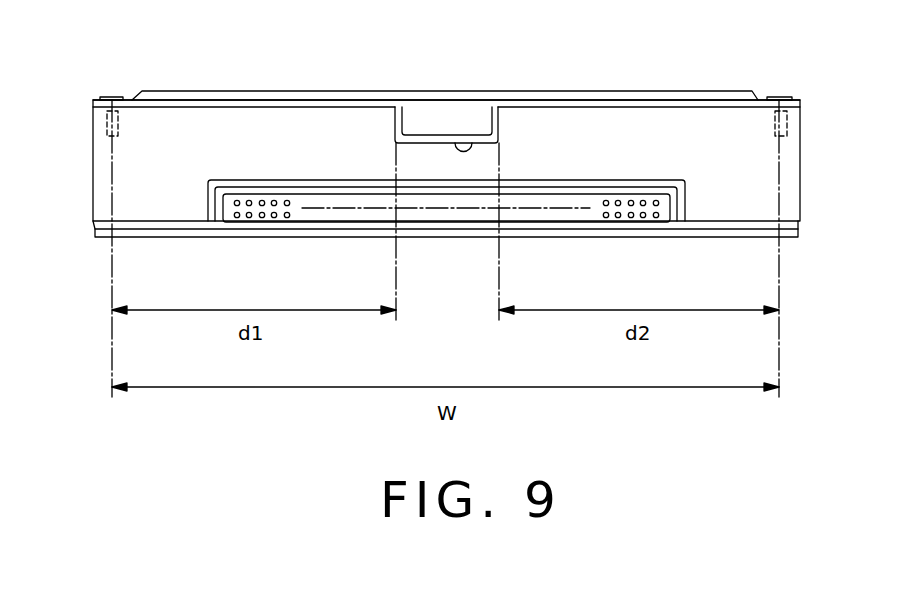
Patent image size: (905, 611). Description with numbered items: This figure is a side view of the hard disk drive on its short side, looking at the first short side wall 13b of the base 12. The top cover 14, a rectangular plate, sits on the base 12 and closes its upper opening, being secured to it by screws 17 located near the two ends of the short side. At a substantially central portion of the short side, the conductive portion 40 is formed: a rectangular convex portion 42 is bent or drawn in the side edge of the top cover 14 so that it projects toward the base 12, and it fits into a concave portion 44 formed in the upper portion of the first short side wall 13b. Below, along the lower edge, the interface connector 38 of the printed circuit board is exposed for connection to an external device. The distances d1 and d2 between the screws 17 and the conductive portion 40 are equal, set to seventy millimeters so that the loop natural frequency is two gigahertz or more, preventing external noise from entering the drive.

The base 12 is at (92, 163).
The first short side wall 13b is at (688, 123).
The top cover 14 is at (198, 97).
The screws 17 is at (108, 95).
The interface connector 38 is at (270, 218).
The conductive portion 40 is at (446, 83).
The convex portion 42 is at (415, 135).
The concave portion 44 is at (472, 143).